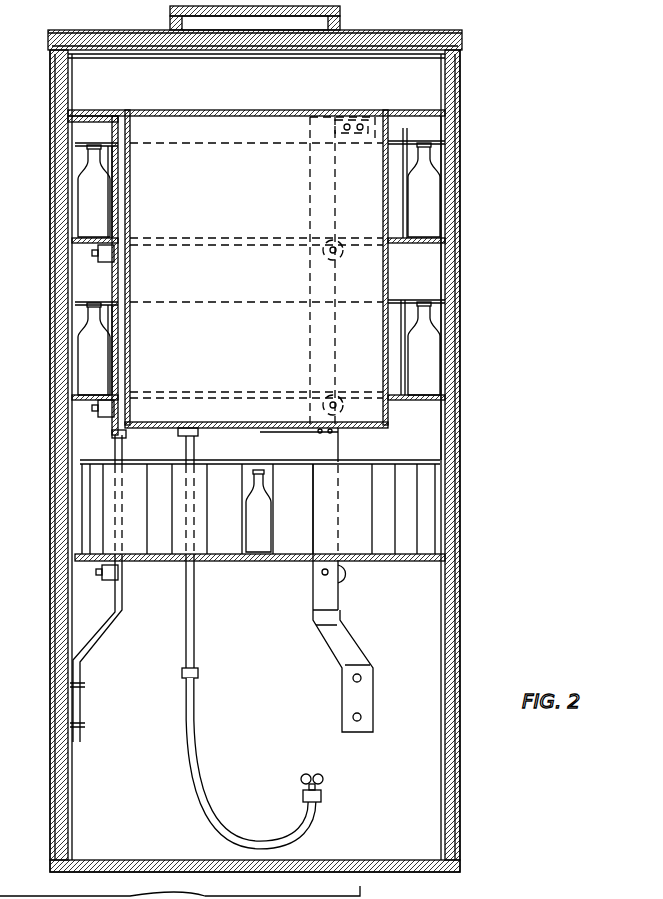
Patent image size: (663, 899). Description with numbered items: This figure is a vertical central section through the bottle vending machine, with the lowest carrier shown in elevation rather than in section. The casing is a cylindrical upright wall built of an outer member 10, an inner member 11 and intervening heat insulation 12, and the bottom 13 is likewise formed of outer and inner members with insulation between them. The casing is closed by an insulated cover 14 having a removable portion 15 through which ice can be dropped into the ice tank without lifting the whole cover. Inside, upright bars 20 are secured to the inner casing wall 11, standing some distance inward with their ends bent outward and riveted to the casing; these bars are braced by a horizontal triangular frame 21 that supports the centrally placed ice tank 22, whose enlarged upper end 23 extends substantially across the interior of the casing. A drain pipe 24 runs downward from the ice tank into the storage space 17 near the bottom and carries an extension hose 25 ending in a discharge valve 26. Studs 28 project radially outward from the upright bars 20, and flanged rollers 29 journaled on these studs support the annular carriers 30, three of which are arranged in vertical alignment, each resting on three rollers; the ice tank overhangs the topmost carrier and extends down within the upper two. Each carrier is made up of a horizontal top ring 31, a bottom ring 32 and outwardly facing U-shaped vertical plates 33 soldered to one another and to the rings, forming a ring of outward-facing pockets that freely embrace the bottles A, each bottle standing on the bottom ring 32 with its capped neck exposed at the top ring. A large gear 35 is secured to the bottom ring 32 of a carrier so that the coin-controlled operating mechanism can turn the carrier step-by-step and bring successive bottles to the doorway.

The outer member 10 is at (460, 481).
The inner member 11 is at (446, 598).
The heat insulation 12 is at (462, 575).
The bottom 13 is at (352, 858).
The cover 14 is at (357, 36).
The removable portion 15 is at (234, 44).
The storage space 17 is at (269, 719).
The upright bars 20 is at (123, 608).
The horizontal triangular frame 21 is at (240, 430).
The ice tank 22 is at (131, 287).
The enlarged upper end 23 is at (73, 91).
The drain pipe 24 is at (196, 647).
The extension hose 25 is at (205, 770).
The discharge valve 26 is at (322, 795).
The studs 28 is at (120, 578).
The flanged rollers 29 is at (106, 262).
The annular carriers 30 is at (405, 143).
The top ring 31 is at (443, 291).
The bottom ring 32 is at (413, 396).
The U-shaped vertical plates 33 is at (403, 337).
The large gear 35 is at (428, 245).
The bottles A is at (432, 190).